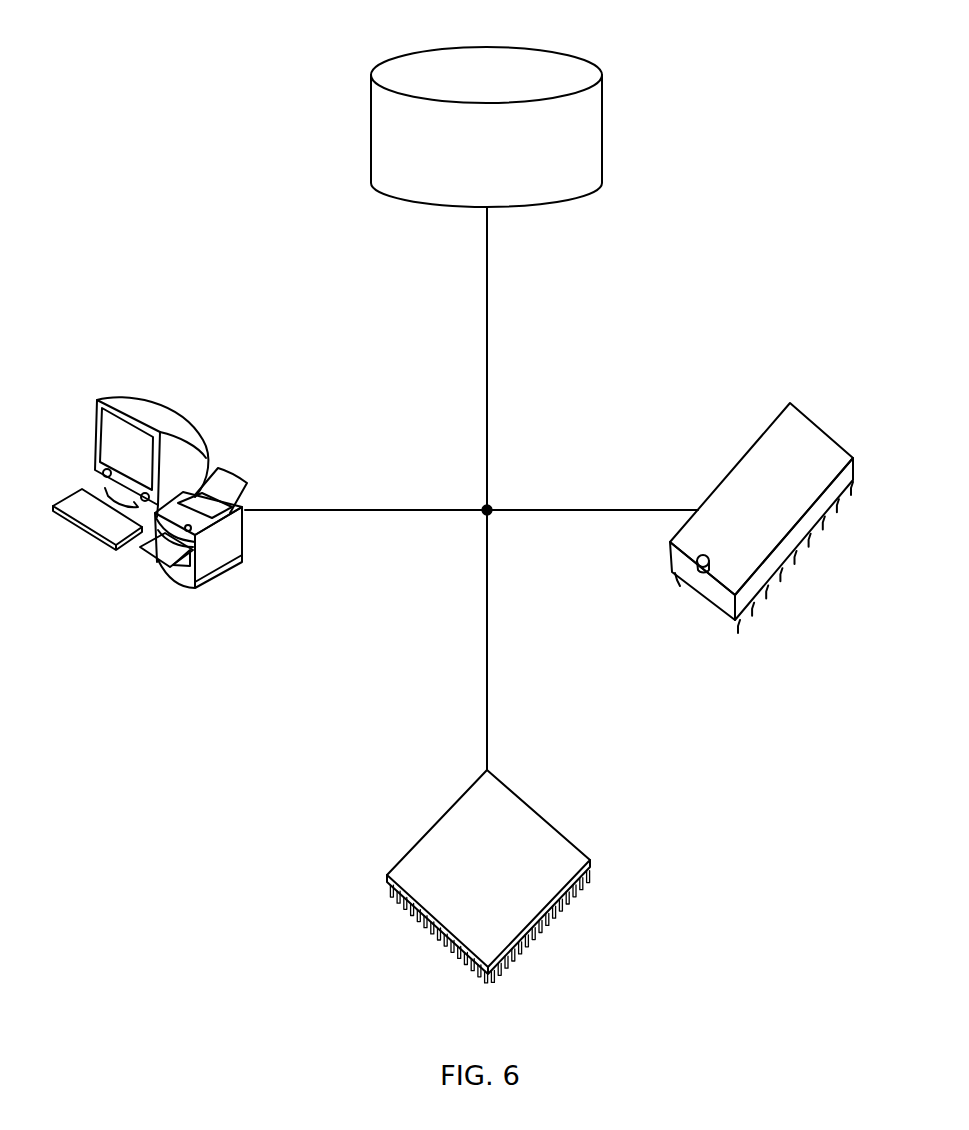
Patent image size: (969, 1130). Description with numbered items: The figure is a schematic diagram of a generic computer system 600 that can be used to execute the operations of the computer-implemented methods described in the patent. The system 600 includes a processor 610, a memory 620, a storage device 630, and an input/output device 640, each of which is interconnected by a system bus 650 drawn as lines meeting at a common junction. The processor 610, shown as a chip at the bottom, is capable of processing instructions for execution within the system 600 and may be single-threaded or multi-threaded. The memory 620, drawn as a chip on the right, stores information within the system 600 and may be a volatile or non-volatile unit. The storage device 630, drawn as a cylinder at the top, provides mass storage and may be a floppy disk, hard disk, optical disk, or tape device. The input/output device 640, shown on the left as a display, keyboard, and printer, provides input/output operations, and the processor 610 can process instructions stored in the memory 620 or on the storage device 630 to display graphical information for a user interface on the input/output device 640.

The computer system 600 is at (165, 147).
The processor 610 is at (425, 835).
The memory 620 is at (767, 435).
The storage device 630 is at (420, 50).
The input/output device 640 is at (95, 408).
The system bus 650 is at (360, 510).